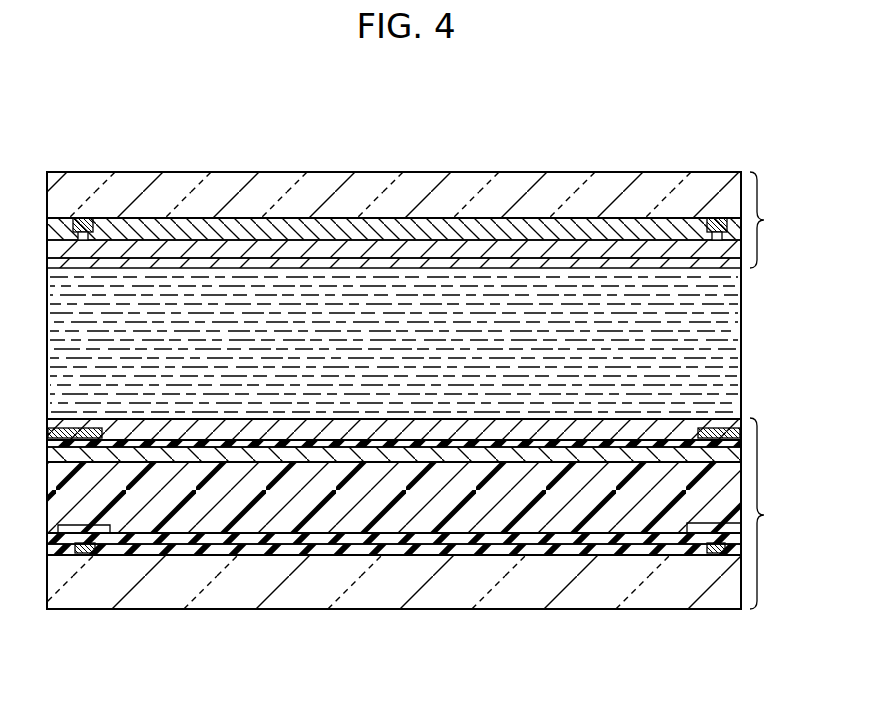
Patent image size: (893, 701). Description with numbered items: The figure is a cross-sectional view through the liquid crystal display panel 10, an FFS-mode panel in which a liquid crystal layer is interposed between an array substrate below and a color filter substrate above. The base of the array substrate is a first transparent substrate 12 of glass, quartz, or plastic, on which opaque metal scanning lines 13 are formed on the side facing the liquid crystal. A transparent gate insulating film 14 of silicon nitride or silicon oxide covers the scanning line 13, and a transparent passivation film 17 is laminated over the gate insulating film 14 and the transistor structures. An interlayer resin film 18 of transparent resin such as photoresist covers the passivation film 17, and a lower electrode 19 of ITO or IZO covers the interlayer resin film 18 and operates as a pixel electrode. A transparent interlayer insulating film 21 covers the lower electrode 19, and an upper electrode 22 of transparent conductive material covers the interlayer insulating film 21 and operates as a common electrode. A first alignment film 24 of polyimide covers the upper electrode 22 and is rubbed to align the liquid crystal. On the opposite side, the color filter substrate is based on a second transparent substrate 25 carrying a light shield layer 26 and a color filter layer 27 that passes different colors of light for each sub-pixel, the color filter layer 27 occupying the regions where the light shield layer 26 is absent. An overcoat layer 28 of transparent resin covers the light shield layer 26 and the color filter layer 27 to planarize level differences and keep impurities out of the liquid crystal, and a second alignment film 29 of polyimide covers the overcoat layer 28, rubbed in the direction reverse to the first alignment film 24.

The liquid crystal display panel 10 is at (527, 106).
The first transparent substrate 12 is at (522, 580).
The scanning line 13 is at (87, 553).
The gate insulating film 14 is at (357, 538).
The passivation film 17 is at (263, 548).
The interlayer resin film 18 is at (614, 515).
The lower electrode 19 is at (333, 455).
The interlayer insulating film 21 is at (385, 444).
The upper electrode 22 is at (76, 433).
The first alignment film 24 is at (474, 430).
The second transparent substrate 25 is at (372, 195).
The light shield layer 26 is at (85, 218).
The color filter layer 27 is at (291, 232).
The overcoat layer 28 is at (247, 250).
The second alignment film 29 is at (203, 262).